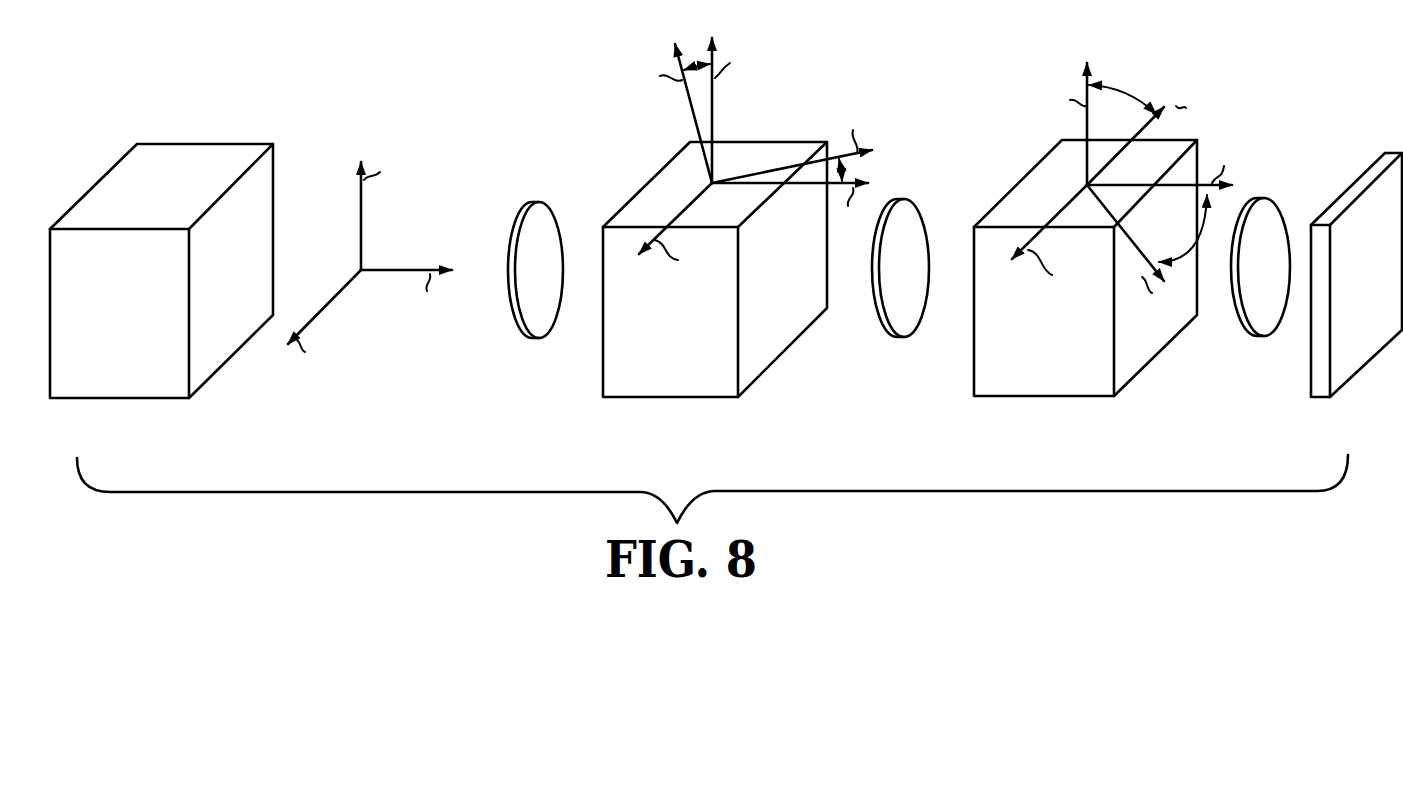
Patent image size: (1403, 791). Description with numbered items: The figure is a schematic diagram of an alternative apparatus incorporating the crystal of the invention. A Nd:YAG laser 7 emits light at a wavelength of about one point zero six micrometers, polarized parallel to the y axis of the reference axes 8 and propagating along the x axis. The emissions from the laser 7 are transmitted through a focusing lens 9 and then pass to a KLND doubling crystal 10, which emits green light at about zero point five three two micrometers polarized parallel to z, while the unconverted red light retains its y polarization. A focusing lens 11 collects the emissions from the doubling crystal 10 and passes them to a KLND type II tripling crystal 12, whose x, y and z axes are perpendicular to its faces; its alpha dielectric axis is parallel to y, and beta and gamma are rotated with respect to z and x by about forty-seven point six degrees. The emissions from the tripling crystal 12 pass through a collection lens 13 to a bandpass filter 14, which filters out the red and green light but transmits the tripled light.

The Nd:YAG laser 7 is at (139, 369).
The reference axes 8 is at (392, 272).
The focusing lens 9 is at (537, 310).
The KLND doubling crystal 10 is at (653, 378).
The focusing lens 11 is at (895, 308).
The KLND type II tripling crystal 12 is at (1057, 365).
The collection lens 13 is at (1253, 310).
The bandpass filter 14 is at (1337, 340).